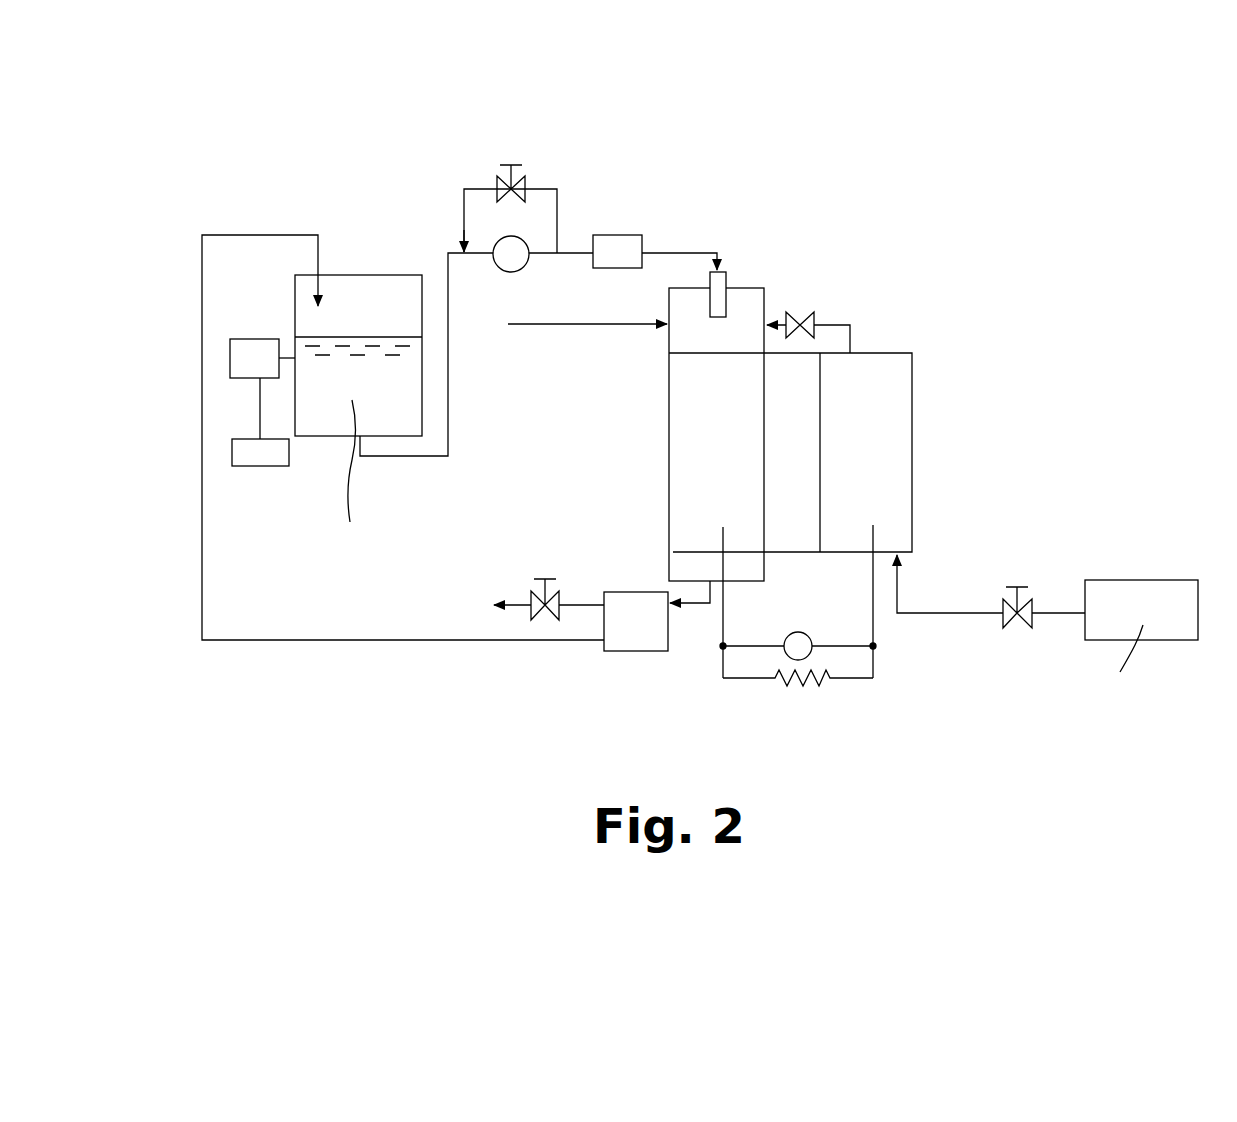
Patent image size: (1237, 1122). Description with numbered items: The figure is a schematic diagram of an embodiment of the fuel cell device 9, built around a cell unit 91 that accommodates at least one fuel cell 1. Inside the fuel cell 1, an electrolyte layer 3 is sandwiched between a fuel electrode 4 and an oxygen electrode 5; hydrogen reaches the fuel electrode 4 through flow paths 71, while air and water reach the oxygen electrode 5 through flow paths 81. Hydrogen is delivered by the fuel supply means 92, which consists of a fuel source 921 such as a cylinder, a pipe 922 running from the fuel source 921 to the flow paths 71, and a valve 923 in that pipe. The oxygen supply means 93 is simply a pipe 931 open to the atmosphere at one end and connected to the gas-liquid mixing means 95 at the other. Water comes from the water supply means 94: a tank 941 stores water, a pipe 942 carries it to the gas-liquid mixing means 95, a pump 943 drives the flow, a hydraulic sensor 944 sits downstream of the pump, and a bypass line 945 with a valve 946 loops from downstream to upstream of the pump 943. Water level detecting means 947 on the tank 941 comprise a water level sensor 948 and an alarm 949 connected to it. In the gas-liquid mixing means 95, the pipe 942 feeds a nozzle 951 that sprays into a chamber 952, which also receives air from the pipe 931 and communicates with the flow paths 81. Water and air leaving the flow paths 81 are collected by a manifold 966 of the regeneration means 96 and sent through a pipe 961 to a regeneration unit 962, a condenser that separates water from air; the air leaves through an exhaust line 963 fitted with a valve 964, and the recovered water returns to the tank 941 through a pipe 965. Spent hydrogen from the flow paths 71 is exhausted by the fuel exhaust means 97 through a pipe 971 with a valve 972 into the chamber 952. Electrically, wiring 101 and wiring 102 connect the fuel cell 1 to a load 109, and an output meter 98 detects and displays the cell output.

The fuel cell 1 is at (799, 444).
The electrolyte layer 3 is at (803, 498).
The fuel electrode 4 is at (903, 427).
The oxygen electrode 5 is at (692, 437).
The fuel cell device 9 is at (753, 172).
The flow paths for hydrogen 71 is at (890, 462).
The flow paths for air 81 is at (698, 478).
The cell unit 91 is at (799, 422).
The fuel supply means 92 is at (1047, 613).
The oxygen supply means 93 is at (565, 358).
The water supply means 94 is at (446, 256).
The gas-liquid mixing means 95 is at (741, 387).
The regeneration means 96 is at (459, 476).
The fuel exhaust means 97 is at (845, 303).
The output meter 98 is at (798, 631).
The wiring 101 is at (873, 660).
The wiring 102 is at (745, 679).
The load 109 is at (798, 688).
The fuel source 921 is at (1135, 580).
The pipe 922 is at (1047, 611).
The valve 923 is at (1012, 584).
The pipe 931 is at (613, 326).
The tank 941 is at (372, 274).
The pipe 942 is at (425, 457).
The pump 943 is at (528, 268).
The hydraulic sensor 944 is at (617, 235).
The bypass line 945 is at (558, 203).
The valve 946 is at (514, 165).
The water level detecting means 947 is at (256, 401).
The water level sensor 948 is at (243, 339).
The alarm 949 is at (261, 467).
The nozzle 951 is at (723, 270).
The chamber 952 is at (752, 305).
The pipe 961 is at (693, 607).
The regeneration unit 962 is at (633, 652).
The exhaust line 963 is at (520, 605).
The valve 964 is at (547, 578).
The pipe 965 is at (392, 641).
The manifold 966 is at (687, 570).
The pipe 971 is at (828, 323).
The valve 972 is at (798, 312).